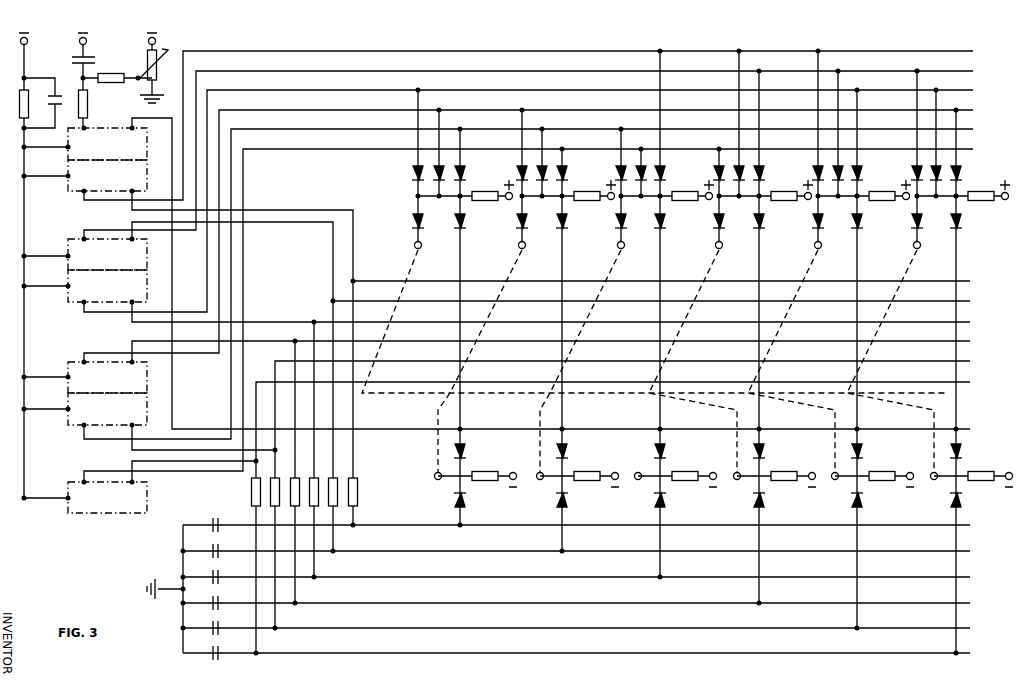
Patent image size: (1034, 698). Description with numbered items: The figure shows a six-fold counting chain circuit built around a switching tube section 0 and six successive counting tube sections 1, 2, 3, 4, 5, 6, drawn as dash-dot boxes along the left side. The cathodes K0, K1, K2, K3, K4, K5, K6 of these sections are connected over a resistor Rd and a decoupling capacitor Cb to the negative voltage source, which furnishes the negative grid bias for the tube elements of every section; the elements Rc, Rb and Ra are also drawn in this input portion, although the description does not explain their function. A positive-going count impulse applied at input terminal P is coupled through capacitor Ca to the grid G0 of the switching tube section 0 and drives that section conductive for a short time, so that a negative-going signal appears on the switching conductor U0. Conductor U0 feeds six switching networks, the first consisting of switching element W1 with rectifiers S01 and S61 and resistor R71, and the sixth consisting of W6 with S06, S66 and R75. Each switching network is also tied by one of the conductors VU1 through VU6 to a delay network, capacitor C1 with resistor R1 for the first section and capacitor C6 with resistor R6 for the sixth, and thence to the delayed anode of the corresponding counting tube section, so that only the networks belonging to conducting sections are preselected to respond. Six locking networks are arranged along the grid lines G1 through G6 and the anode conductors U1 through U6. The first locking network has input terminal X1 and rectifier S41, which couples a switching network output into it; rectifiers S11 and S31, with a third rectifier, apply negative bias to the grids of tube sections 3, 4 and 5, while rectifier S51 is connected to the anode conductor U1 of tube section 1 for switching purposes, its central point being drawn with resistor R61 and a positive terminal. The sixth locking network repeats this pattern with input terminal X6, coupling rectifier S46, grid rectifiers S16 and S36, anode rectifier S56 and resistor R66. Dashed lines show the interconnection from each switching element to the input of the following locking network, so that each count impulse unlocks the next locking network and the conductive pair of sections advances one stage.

The resistor Rd is at (15, 80).
The decoupling capacitor Cb is at (50, 103).
The input terminal P is at (83, 38).
The capacitor Ca is at (72, 71).
The resistor Rc is at (94, 109).
The resistor Rb is at (117, 71).
The variable resistor Ra is at (155, 68).
The grid G0 is at (73, 120).
The switching conductor U0 is at (555, 273).
The switching tube section 0 is at (107, 144).
The counting tube section 1 is at (107, 175).
The counting tube section 2 is at (107, 254).
The counting tube section 3 is at (107, 286).
The counting tube section 4 is at (107, 377).
The counting tube section 5 is at (107, 409).
The counting tube section 6 is at (107, 497).
The cathode K0 is at (46, 145).
The cathode K1 is at (46, 170).
The cathode K2 is at (46, 250).
The cathode K3 is at (46, 281).
The cathode K4 is at (46, 370).
The cathode K5 is at (46, 403).
The cathode K6 is at (46, 492).
The control grid G1 is at (540, 122).
The control grid G6 is at (540, 312).
The anode conductor U1 is at (564, 334).
The anode conductor U6 is at (564, 428).
The conductor VU1 is at (592, 526).
The conductor VU6 is at (592, 654).
The resistor R1 is at (363, 501).
The resistor R6 is at (248, 565).
The capacitor C1 is at (213, 517).
The capacitor C6 is at (213, 665).
The rectifier S11 is at (409, 175).
The rectifier S31 is at (473, 175).
The rectifier S41 is at (409, 223).
The rectifier S51 is at (473, 223).
The resistor R61 is at (487, 206).
The input terminal X1 is at (409, 248).
The rectifier S16 is at (907, 175).
The rectifier S36 is at (969, 175).
The rectifier S46 is at (907, 223).
The rectifier S56 is at (969, 223).
The resistor R66 is at (982, 206).
The input terminal X6 is at (926, 248).
The rectifier S01 is at (472, 452).
The rectifier S61 is at (452, 503).
The resistor R71 is at (487, 485).
The switching element W1 is at (429, 477).
The rectifier S06 is at (968, 452).
The rectifier S66 is at (947, 501).
The resistor R75 is at (982, 485).
The switching element W6 is at (927, 470).